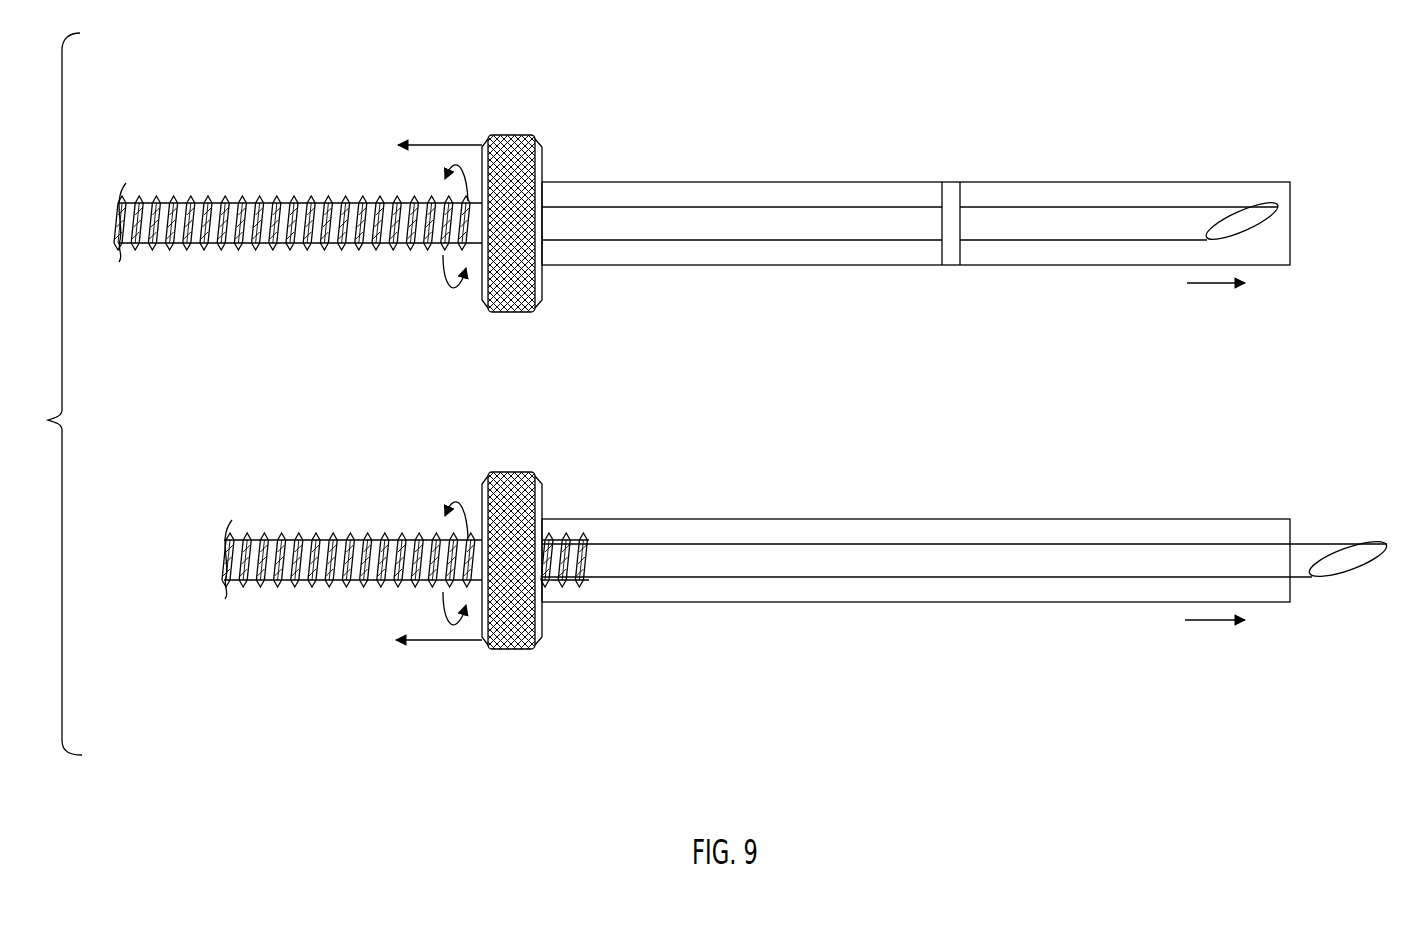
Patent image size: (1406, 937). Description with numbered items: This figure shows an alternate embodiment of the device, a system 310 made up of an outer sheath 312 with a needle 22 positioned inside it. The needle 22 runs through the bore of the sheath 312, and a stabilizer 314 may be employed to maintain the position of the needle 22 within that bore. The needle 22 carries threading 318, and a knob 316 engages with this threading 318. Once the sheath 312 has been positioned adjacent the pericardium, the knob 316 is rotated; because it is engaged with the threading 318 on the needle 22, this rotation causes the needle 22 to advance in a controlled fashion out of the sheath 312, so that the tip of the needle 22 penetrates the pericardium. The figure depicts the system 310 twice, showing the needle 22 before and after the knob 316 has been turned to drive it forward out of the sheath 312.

The system 310 is at (808, 137).
The outer sheath 312 is at (1127, 255).
The stabilizer 314 is at (952, 197).
The knob 316 is at (510, 313).
The threading 318 is at (314, 238).
The needle 22 is at (1172, 216).